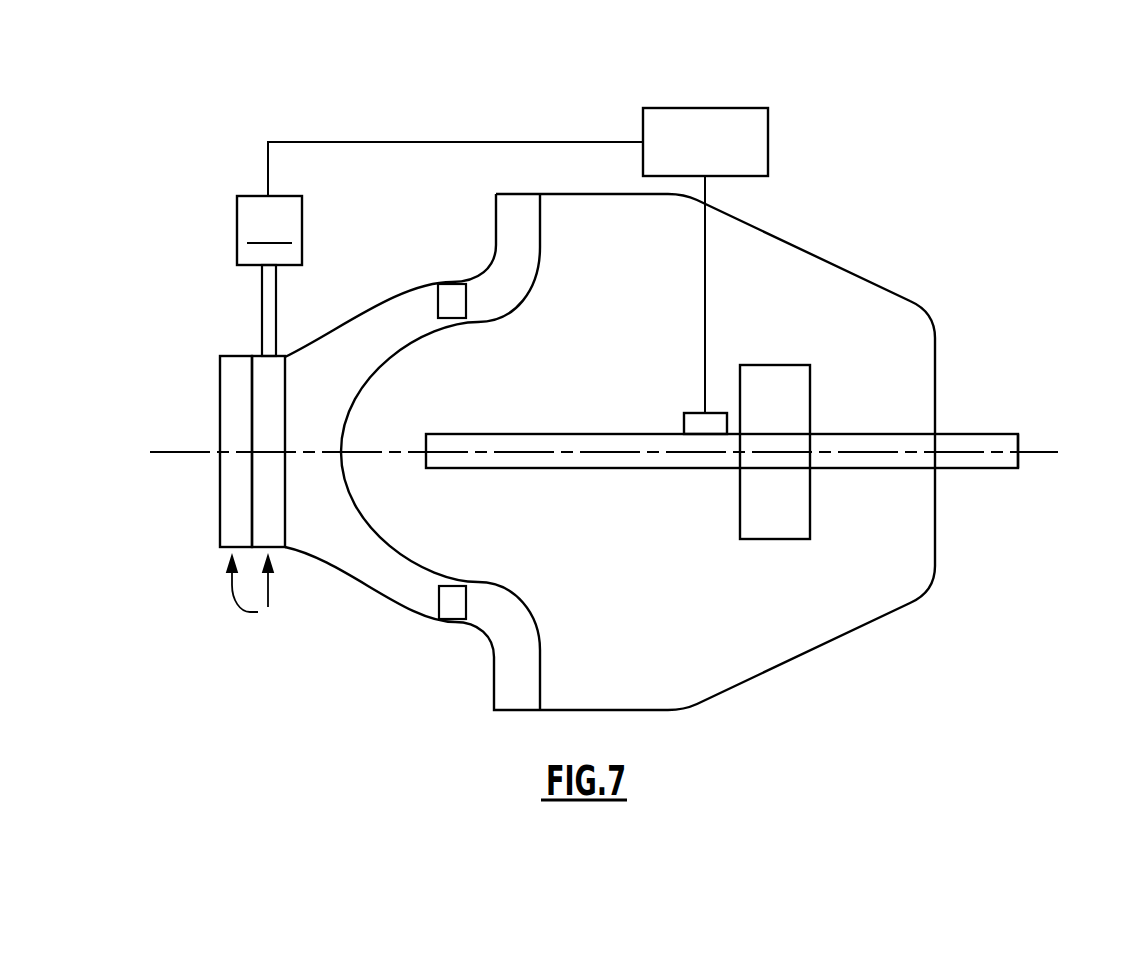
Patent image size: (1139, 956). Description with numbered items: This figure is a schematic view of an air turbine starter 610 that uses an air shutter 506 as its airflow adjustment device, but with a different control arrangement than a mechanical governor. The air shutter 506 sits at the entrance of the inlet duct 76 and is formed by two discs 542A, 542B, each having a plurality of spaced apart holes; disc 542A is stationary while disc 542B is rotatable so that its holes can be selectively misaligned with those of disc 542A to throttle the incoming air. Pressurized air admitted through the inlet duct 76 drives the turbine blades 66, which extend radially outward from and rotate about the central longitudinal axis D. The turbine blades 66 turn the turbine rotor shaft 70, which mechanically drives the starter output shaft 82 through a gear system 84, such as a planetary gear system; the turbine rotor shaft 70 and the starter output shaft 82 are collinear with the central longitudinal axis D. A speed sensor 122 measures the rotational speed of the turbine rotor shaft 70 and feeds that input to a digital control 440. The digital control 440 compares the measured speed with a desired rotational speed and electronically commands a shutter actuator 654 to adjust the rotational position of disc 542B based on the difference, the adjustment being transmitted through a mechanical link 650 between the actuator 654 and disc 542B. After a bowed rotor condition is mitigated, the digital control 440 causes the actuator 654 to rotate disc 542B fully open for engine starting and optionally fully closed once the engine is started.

The digital control 440 is at (722, 108).
The shutter actuator 654 is at (269, 230).
The mechanical link 650 is at (261, 309).
The disc 542A is at (236, 370).
The disc 542B is at (277, 375).
The turbine blades 66 is at (452, 293).
The air turbine starter 610 is at (840, 226).
The inlet duct 76 is at (316, 527).
The air shutter 506 is at (263, 592).
The turbine rotor shaft 70 is at (565, 436).
The starter output shaft 82 is at (1003, 441).
The gear system 84 is at (780, 373).
The speed sensor 122 is at (688, 413).
The central longitudinal axis D is at (1058, 453).